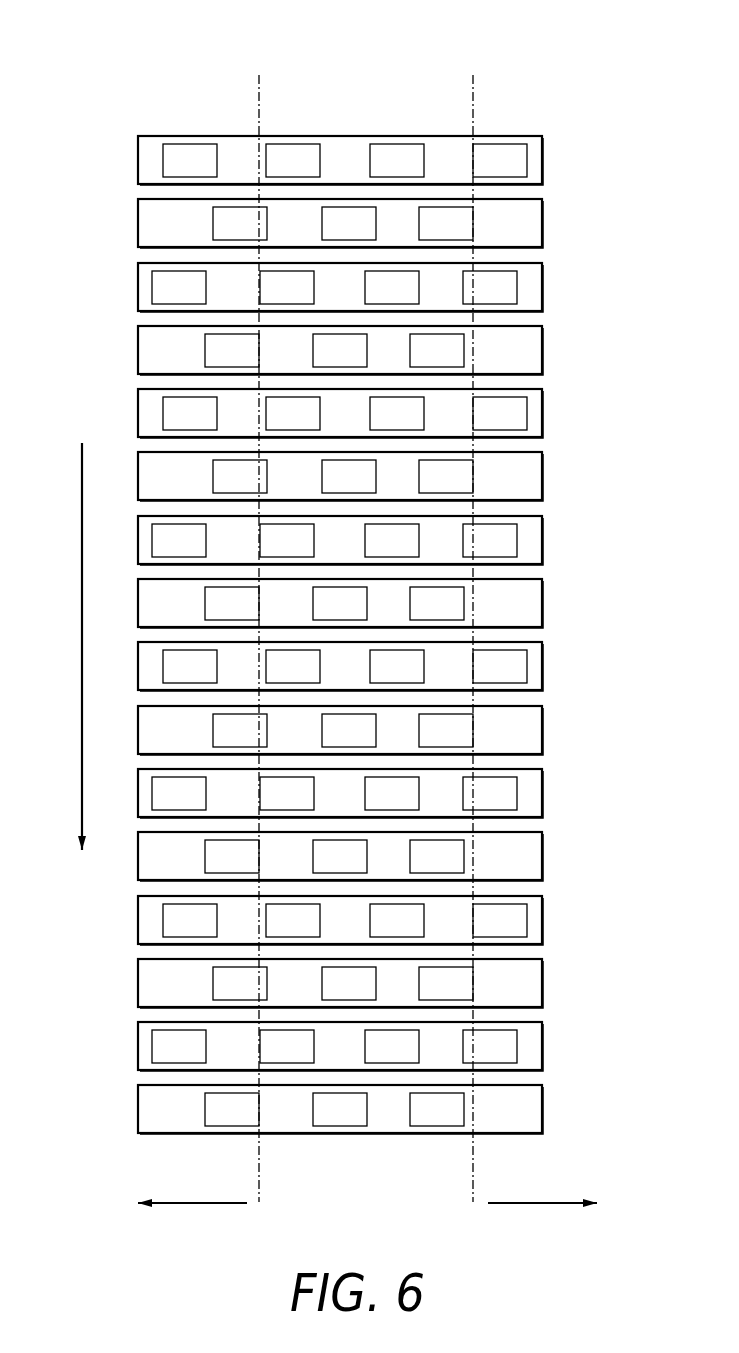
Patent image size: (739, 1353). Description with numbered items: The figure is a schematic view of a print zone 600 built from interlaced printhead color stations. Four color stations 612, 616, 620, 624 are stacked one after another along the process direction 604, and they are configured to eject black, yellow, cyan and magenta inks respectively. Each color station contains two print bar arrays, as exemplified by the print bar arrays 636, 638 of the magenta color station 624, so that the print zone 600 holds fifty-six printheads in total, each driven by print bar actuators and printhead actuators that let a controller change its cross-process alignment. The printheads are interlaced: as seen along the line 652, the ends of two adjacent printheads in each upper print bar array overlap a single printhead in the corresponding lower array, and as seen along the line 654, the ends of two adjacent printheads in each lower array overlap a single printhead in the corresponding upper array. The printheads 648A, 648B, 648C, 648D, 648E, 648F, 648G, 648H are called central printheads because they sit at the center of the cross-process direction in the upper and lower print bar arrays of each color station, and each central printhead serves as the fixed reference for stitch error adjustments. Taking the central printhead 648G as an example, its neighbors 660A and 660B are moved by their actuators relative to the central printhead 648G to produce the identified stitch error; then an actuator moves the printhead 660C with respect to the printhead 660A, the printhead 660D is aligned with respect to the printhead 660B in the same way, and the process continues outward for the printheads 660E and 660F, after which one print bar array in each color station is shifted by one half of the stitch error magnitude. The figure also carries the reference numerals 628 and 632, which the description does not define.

The print zone 600 is at (126, 46).
The process direction 604 is at (80, 647).
The color station 612 is at (550, 896).
The color station 616 is at (550, 642).
The color station 620 is at (550, 389).
The color station 624 is at (550, 136).
The left region direction 628 is at (190, 1203).
The right region direction 632 is at (545, 1203).
The print bar array 636 is at (120, 137).
The print bar array 638 is at (120, 260).
The central printhead 648A is at (349, 240).
The central printhead 648B is at (341, 367).
The central printhead 648C is at (349, 493).
The central printhead 648D is at (341, 620).
The central printhead 648E is at (349, 747).
The central printhead 648F is at (341, 873).
The central printhead 648G is at (349, 1000).
The central printhead 648H is at (341, 1126).
The line 652 is at (473, 118).
The line 654 is at (257, 118).
The printhead 660A is at (293, 937).
The printhead 660B is at (397, 937).
The printhead 660C is at (213, 980).
The printhead 660D is at (446, 1000).
The printhead 660E is at (163, 918).
The printhead 660F is at (500, 937).